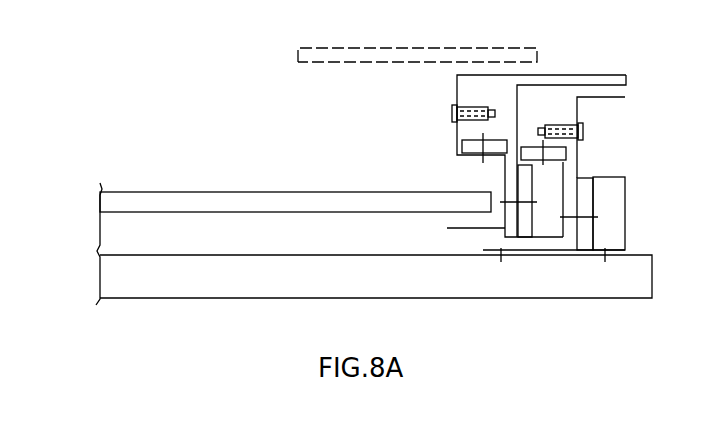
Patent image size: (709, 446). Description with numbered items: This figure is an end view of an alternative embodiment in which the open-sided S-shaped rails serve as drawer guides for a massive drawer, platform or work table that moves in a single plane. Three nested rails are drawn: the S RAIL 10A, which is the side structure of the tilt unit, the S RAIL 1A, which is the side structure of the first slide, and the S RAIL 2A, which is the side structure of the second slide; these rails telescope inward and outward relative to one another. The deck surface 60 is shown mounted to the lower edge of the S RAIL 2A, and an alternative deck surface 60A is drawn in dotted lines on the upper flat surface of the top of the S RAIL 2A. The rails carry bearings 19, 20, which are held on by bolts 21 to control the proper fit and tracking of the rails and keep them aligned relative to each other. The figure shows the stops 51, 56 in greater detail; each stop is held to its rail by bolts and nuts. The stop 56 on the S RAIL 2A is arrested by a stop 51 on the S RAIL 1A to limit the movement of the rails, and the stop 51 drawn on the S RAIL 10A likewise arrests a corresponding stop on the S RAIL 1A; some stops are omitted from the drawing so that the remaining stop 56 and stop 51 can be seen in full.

The deck surface mounted on top of S RAIL 60A is at (435, 48).
The S RAIL of slide 2 2A is at (608, 75).
The S RAIL of slide 1 1A is at (623, 84).
The S RAIL of tilt unit 10A is at (625, 97).
The stop 56 is at (452, 110).
The stop 51 is at (583, 130).
The bearing 20 is at (562, 152).
The deck surface 60 is at (413, 192).
The bearing 19 is at (585, 187).
The bolt 21 is at (543, 165).